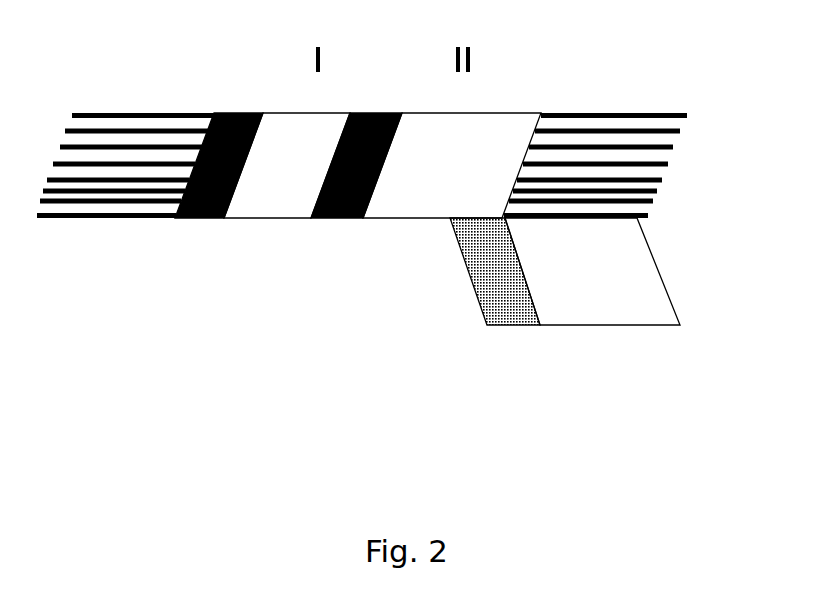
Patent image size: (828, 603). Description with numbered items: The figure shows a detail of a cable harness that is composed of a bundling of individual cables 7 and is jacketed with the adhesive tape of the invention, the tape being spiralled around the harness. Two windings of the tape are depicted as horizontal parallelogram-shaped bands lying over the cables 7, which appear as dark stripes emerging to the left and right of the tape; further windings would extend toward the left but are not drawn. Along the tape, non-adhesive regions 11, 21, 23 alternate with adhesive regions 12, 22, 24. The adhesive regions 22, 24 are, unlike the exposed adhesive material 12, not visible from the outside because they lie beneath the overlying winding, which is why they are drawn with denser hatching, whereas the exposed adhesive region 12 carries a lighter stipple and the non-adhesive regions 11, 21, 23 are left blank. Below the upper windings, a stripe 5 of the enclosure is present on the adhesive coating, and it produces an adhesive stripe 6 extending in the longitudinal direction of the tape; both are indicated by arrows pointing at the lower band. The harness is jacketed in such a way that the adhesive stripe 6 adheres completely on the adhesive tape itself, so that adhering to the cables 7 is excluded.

The stripe of the enclosure 5 is at (592, 320).
The adhesive stripe 6 is at (502, 320).
The individual cables 7 is at (648, 130).
The non-adhesive region 11 is at (571, 275).
The adhesive region 12 is at (481, 255).
The non-adhesive region 21 is at (435, 190).
The adhesive region 22 is at (341, 204).
The non-adhesive region 23 is at (278, 174).
The adhesive region 24 is at (213, 189).